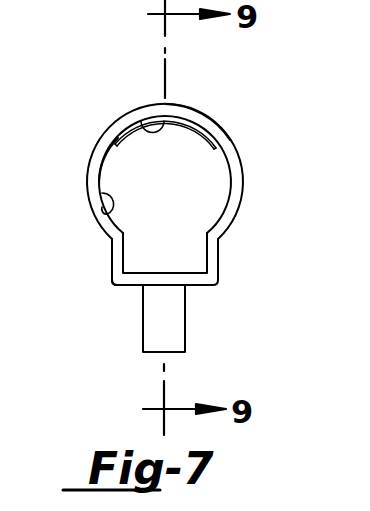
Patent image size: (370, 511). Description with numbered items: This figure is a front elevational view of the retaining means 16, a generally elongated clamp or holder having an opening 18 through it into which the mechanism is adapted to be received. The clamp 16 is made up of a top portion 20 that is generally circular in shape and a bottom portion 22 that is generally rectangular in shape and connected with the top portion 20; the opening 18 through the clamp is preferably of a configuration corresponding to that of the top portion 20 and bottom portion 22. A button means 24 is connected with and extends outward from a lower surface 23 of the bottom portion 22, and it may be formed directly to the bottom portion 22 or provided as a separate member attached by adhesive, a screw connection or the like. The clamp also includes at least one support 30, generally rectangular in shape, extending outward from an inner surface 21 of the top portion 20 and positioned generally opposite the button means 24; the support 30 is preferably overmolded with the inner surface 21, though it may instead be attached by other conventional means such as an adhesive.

The retaining means 16 is at (246, 183).
The opening 18 is at (117, 160).
The top portion 20 is at (220, 118).
The inner surface 21 is at (108, 216).
The bottom portion 22 is at (218, 251).
The lower surface 23 is at (132, 287).
The button means 24 is at (186, 326).
The support 30 is at (140, 126).